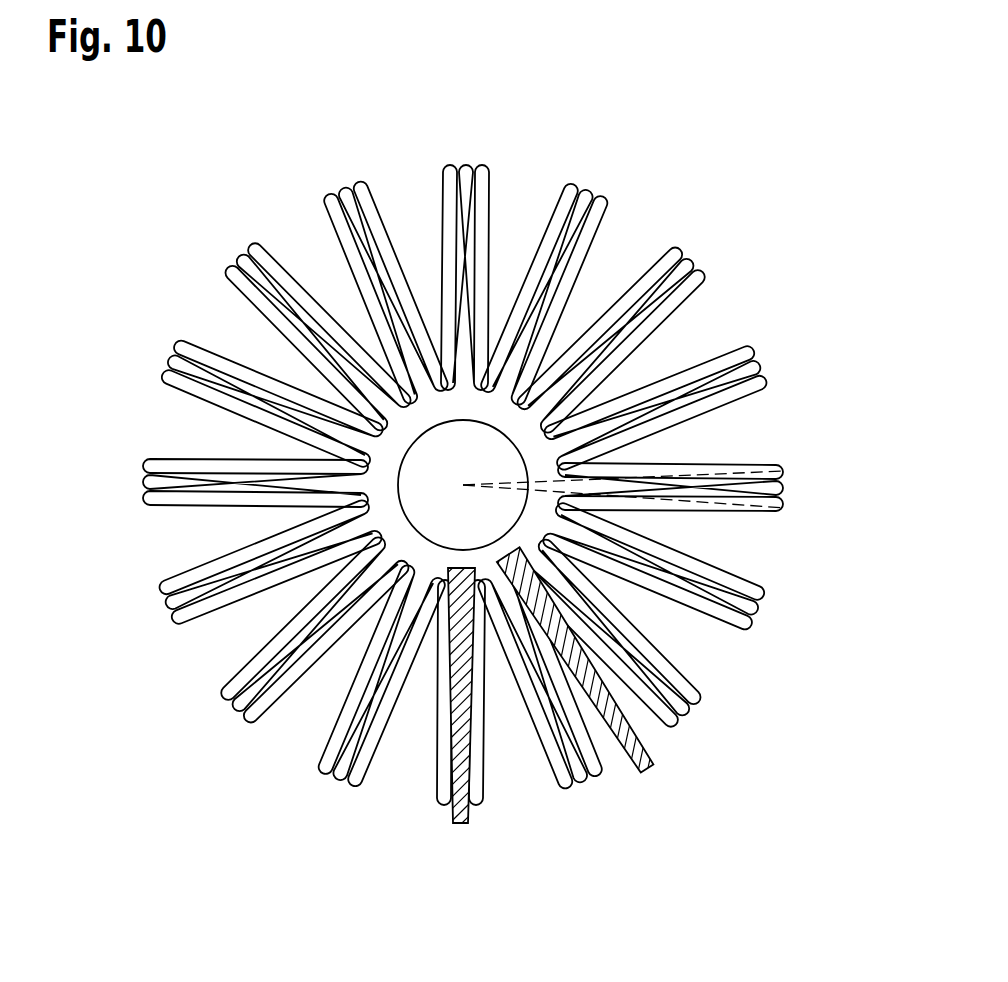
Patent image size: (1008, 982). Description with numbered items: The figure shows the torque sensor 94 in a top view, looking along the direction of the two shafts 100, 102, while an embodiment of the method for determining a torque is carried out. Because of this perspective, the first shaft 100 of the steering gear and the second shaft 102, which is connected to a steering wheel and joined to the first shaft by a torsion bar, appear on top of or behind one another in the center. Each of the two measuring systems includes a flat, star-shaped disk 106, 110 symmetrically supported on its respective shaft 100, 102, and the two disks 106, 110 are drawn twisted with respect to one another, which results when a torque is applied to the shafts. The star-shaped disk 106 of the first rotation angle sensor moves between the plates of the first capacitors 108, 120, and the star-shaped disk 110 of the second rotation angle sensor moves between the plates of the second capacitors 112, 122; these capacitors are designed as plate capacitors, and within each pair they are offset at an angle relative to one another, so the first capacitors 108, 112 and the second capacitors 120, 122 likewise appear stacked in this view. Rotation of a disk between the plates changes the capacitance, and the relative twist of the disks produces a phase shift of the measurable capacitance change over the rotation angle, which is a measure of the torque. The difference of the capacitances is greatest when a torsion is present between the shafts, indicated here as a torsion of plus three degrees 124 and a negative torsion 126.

The torque sensor 94 is at (496, 545).
The first shaft 100 is at (331, 621).
The second shaft 102 is at (418, 502).
The star-shaped disk 106 is at (504, 485).
The star-shaped disk 110 is at (795, 377).
The capacitor 108 is at (473, 747).
The capacitor 112 is at (462, 850).
The capacitor 120 is at (661, 684).
The capacitor 122 is at (657, 781).
The torsion of +3° 124 is at (510, 483).
The torsion of −° 126 is at (510, 490).